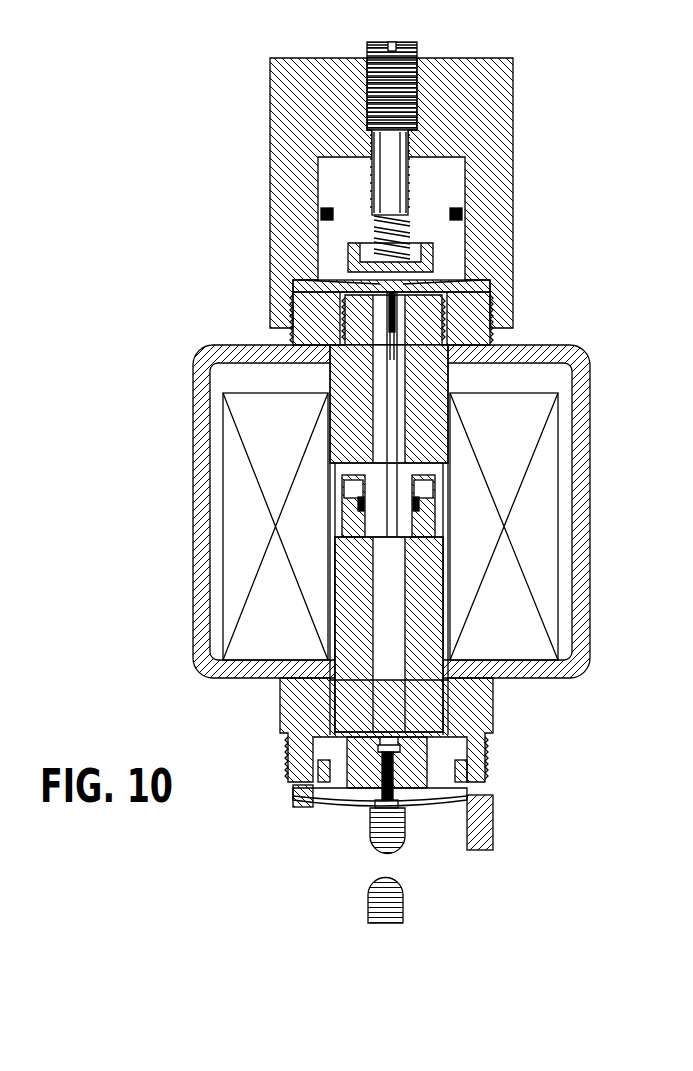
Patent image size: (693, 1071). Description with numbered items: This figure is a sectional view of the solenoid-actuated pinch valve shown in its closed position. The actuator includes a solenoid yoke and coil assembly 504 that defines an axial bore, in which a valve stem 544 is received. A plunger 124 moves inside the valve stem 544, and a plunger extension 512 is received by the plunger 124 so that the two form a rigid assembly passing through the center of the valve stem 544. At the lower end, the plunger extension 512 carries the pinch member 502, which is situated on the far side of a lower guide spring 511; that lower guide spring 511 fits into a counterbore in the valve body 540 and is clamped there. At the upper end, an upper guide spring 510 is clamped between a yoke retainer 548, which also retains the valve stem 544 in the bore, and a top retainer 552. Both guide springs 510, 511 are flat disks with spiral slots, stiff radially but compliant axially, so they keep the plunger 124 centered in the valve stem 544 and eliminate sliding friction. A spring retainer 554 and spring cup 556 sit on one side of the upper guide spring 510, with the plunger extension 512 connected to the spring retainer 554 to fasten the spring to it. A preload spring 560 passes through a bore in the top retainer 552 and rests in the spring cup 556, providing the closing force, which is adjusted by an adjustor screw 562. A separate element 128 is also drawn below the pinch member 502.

The plunger 124 is at (337, 612).
The pin 128 is at (400, 903).
The pinch member 502 is at (372, 845).
The solenoid yoke and coil assembly 504 is at (193, 457).
The upper guide spring 510 is at (445, 282).
The lower guide spring 511 is at (312, 810).
The plunger extension 512 is at (445, 733).
The valve body 540 is at (493, 817).
The valve stem 544 is at (282, 690).
The yoke retainer 548 is at (295, 317).
The top retainer 552 is at (513, 127).
The spring retainer 554 is at (348, 253).
The spring cup 556 is at (325, 182).
The preload spring 560 is at (413, 212).
The adjustor screw 562 is at (363, 97).